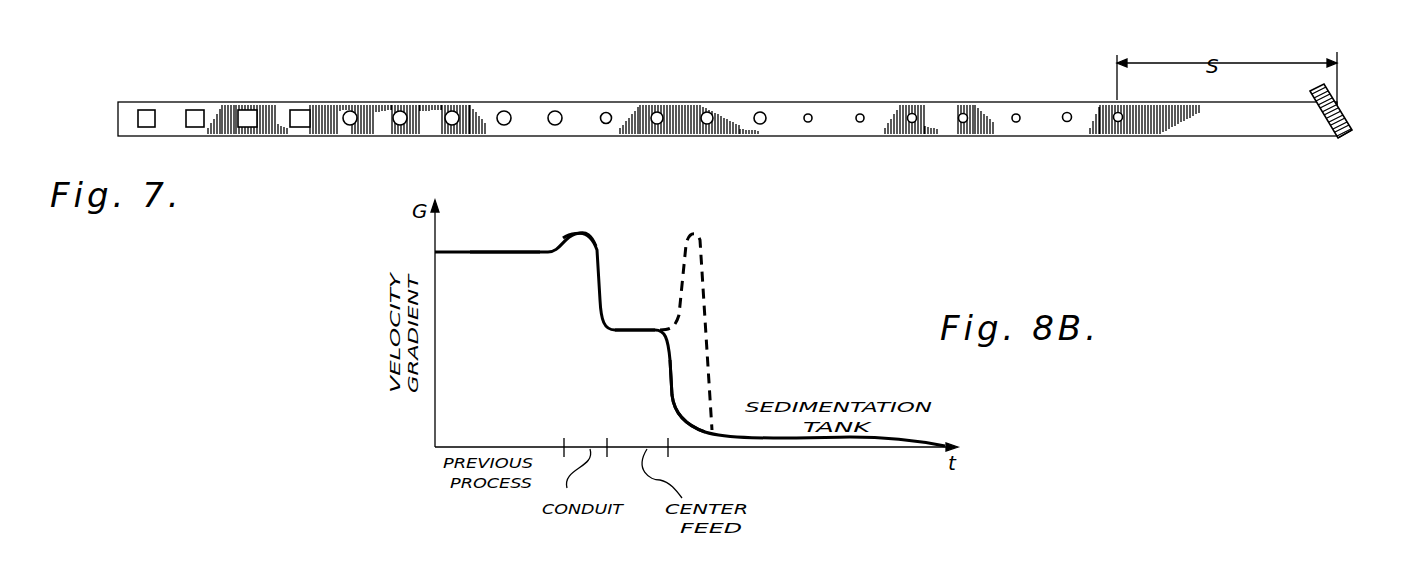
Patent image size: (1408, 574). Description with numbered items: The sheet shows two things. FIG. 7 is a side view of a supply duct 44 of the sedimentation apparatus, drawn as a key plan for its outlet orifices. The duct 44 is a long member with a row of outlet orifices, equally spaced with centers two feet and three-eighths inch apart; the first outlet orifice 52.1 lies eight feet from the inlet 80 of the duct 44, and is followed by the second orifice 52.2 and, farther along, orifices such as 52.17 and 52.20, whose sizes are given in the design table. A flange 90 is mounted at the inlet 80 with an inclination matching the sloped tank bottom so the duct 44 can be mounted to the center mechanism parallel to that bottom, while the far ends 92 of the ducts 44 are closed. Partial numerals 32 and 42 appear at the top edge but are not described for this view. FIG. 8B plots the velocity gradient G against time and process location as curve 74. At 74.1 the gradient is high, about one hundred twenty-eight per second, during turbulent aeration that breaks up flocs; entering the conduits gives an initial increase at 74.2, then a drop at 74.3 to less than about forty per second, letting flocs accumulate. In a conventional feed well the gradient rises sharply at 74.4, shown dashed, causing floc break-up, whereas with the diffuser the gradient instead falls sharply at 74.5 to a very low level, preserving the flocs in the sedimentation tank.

In FIG. 7, the ends of ducts 92 is at (118, 117).
In FIG. 7, the outlet orifice 52.20 is at (144, 108).
In FIG. 7, the outlet orifice 52.17 is at (300, 128).
In FIG. 7, the duct 44 is at (688, 135).
In FIG. 7, the outlet orifice 52.2 is at (1067, 112).
In FIG. 7, the first outlet orifice 52.1 is at (1119, 124).
In FIG. 7, the inlet 80 is at (1348, 118).
In FIG. 7, the flange 90 is at (1346, 139).
In FIG. 7, the inlet 32 is at (634, 12).
In FIG. 7, the outlet 42 is at (712, 12).
In FIG. 8B, the curve 74 is at (458, 249).
In FIG. 8B, the velocity gradient in aeration process 74.1 is at (513, 255).
In FIG. 8B, the initial increase in velocity gradient 74.2 is at (592, 227).
In FIG. 8B, the lower velocity gradient level in conduits 74.3 is at (618, 334).
In FIG. 8B, the velocity gradient increase at feed well 74.4 is at (716, 278).
In FIG. 8B, the sharp reduction of velocity gradient 74.5 is at (663, 405).